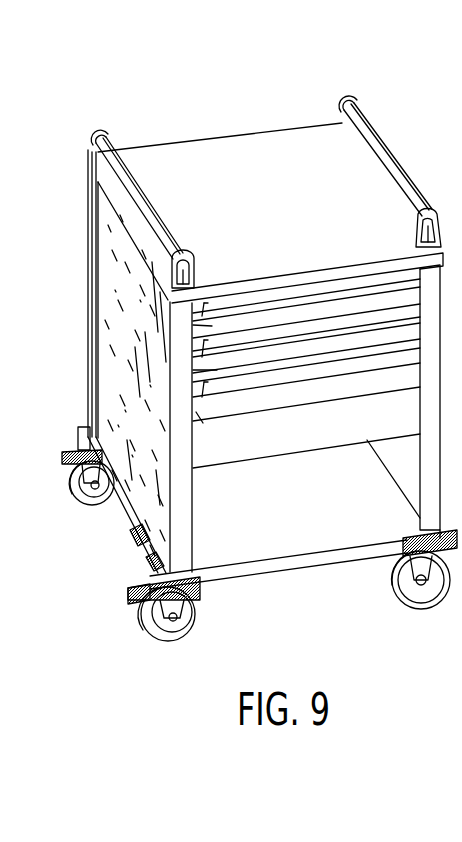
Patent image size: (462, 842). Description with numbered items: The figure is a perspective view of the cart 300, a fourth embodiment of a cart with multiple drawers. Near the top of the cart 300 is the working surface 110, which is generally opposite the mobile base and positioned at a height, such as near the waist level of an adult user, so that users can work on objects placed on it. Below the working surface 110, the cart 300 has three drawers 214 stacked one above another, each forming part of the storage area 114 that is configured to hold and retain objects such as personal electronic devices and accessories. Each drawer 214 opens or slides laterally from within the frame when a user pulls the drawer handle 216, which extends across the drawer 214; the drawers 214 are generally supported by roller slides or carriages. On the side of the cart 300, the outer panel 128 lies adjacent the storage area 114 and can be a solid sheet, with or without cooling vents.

The cart 300 is at (124, 106).
The working surface 110 is at (222, 143).
The outer panel 128 is at (110, 250).
The drawer handle 216 is at (204, 318).
The drawer 214 is at (212, 327).
The storage area 114 is at (273, 535).